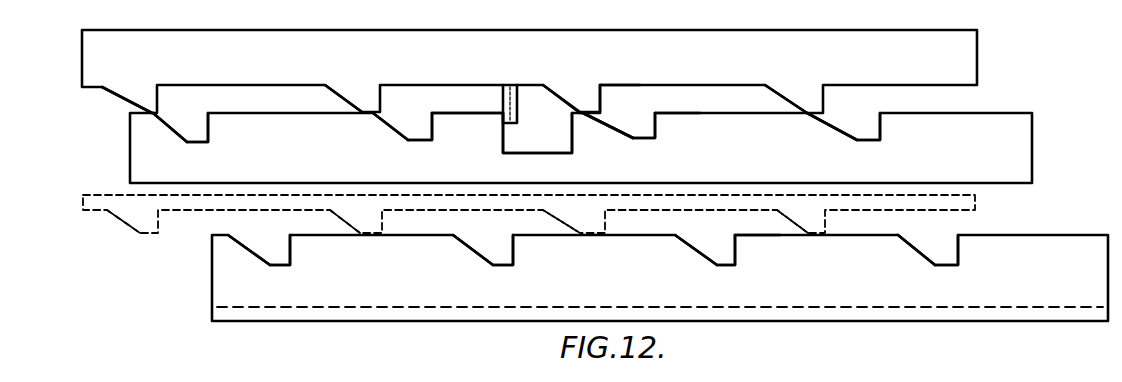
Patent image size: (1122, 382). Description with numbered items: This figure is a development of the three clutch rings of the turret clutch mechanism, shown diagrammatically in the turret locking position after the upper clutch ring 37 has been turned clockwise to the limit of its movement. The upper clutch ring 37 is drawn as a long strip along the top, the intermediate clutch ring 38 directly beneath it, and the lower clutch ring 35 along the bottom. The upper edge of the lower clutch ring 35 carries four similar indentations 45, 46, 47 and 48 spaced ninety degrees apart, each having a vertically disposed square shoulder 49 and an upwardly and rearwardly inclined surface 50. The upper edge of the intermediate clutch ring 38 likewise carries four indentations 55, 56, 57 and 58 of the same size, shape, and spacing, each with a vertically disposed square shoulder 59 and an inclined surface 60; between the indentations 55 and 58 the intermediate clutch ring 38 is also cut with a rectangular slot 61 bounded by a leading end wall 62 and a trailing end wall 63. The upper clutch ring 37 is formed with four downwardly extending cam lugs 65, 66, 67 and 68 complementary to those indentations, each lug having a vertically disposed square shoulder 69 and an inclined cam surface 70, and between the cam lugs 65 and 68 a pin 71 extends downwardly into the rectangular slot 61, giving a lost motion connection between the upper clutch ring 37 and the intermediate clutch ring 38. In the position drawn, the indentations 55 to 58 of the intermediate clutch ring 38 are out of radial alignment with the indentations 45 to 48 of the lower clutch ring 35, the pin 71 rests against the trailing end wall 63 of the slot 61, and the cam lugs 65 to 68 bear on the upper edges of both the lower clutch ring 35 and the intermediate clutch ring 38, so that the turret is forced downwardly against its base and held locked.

The upper clutch ring 37 is at (757, 67).
The intermediate clutch ring 38 is at (797, 160).
The lower clutch ring 35 is at (897, 289).
The cam lug 67 is at (131, 92).
The cam lug 68 is at (357, 92).
The inclined cam surface 70 is at (558, 84).
The cam lug 65 is at (583, 97).
The square shoulder 69 is at (606, 93).
The cam lug 66 is at (808, 88).
The pin 71 is at (517, 107).
The inclined surface 60 is at (169, 135).
The indentation 57 is at (193, 137).
The indentation 58 is at (415, 128).
The trailing end wall 63 is at (502, 137).
The rectangular slot 61 is at (532, 153).
The leading end wall 62 is at (573, 135).
The indentation 55 is at (646, 140).
The square shoulder 59 is at (653, 127).
The indentation 56 is at (869, 138).
The inclined surface 50 is at (244, 249).
The indentation 47 is at (276, 263).
The indentation 48 is at (502, 258).
The indentation 45 is at (720, 258).
The square shoulder 49 is at (739, 247).
The indentation 46 is at (947, 263).